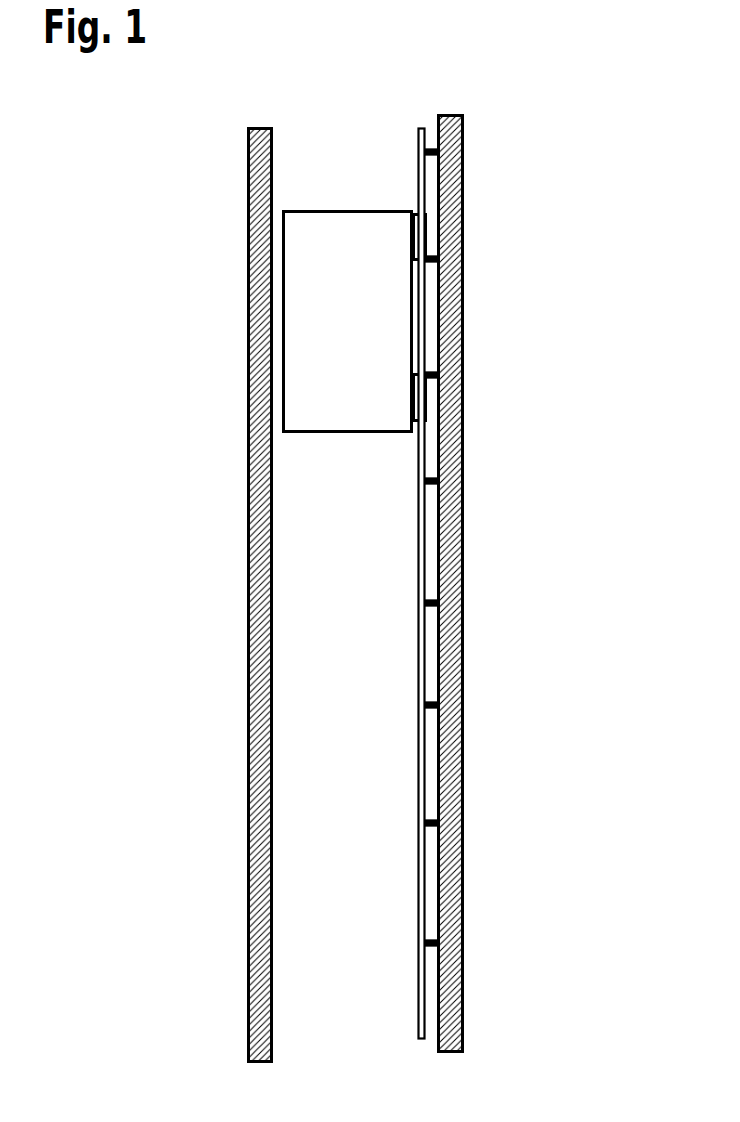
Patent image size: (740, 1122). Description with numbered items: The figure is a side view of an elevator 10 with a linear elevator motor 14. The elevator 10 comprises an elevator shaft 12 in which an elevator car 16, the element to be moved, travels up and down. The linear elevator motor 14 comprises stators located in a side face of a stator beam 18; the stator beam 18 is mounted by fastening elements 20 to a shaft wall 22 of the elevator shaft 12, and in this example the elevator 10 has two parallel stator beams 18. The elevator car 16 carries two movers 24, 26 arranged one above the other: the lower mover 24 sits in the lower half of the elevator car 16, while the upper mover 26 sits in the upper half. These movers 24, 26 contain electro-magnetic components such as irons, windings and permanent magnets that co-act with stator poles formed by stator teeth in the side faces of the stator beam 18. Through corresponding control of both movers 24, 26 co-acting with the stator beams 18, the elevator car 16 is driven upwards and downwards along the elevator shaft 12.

The elevator 10 is at (184, 230).
The elevator shaft 12 is at (385, 517).
The linear elevator motor 14 is at (403, 187).
The elevator car 16 is at (325, 293).
The stator beam 18 is at (423, 660).
The fastening elements 20 is at (438, 820).
The shaft wall 22 is at (450, 918).
The lower mover 24 is at (423, 383).
The upper mover 26 is at (423, 235).